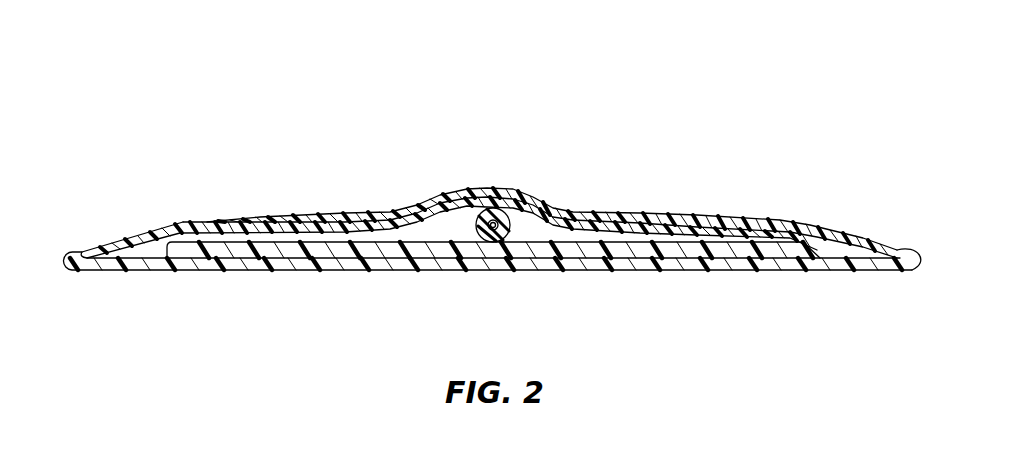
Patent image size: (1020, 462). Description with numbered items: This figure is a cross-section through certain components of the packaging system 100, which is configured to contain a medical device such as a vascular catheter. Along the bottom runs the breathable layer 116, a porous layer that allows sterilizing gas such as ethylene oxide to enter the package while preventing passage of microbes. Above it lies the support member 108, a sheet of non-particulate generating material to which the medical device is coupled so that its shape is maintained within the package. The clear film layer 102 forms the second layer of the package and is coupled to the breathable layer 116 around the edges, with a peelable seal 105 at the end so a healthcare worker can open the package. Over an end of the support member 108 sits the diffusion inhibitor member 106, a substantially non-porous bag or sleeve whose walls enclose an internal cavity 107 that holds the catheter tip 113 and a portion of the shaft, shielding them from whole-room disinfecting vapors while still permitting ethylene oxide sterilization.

The packaging system 100 is at (325, 143).
The clear film layer 102 is at (105, 243).
The seal 105 is at (903, 262).
The diffusion inhibitor member 106 is at (818, 250).
The internal cavity 107 is at (458, 227).
The support member 108 is at (677, 243).
The catheter tip 113 is at (533, 225).
The breathable layer 116 is at (273, 270).